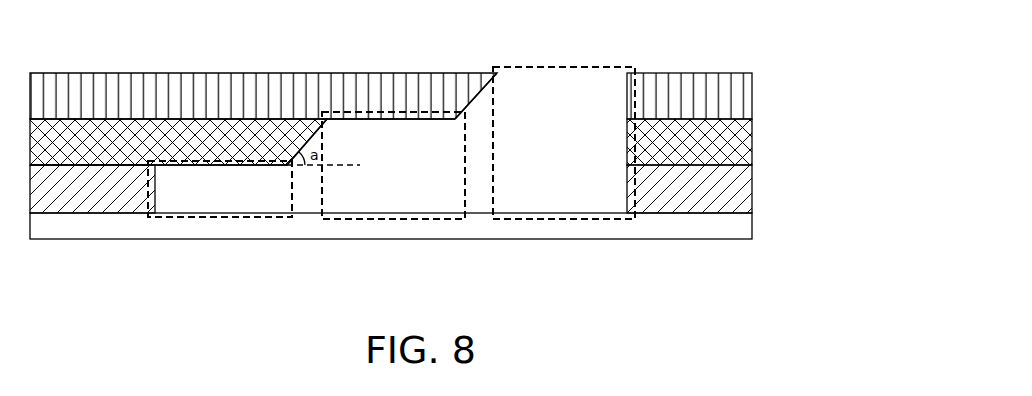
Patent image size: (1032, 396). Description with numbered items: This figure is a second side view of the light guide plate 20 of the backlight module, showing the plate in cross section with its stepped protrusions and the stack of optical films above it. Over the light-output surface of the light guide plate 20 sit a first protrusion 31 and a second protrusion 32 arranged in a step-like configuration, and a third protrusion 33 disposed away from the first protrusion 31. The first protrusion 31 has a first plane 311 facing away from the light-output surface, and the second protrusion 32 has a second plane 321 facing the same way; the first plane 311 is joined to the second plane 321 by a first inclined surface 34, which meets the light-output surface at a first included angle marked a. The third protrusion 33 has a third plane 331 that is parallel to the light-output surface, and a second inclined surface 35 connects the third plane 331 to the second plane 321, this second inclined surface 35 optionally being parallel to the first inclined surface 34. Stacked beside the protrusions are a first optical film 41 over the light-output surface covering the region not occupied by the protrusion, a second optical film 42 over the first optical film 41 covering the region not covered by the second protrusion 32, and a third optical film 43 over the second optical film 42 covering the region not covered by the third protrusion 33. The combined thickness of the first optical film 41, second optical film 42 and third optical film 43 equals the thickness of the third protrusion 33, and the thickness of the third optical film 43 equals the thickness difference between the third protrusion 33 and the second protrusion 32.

The light guide plate 20 is at (752, 220).
The first optical film 41 is at (752, 185).
The second optical film 42 is at (752, 140).
The third optical film 43 is at (752, 93).
The first protrusion 31 is at (220, 216).
The second protrusion 32 is at (393, 217).
The third protrusion 33 is at (565, 218).
The first plane 311 is at (218, 165).
The first inclined surface 34 is at (304, 146).
The second plane 321 is at (392, 120).
The second inclined surface 35 is at (478, 95).
The third plane 331 is at (607, 70).